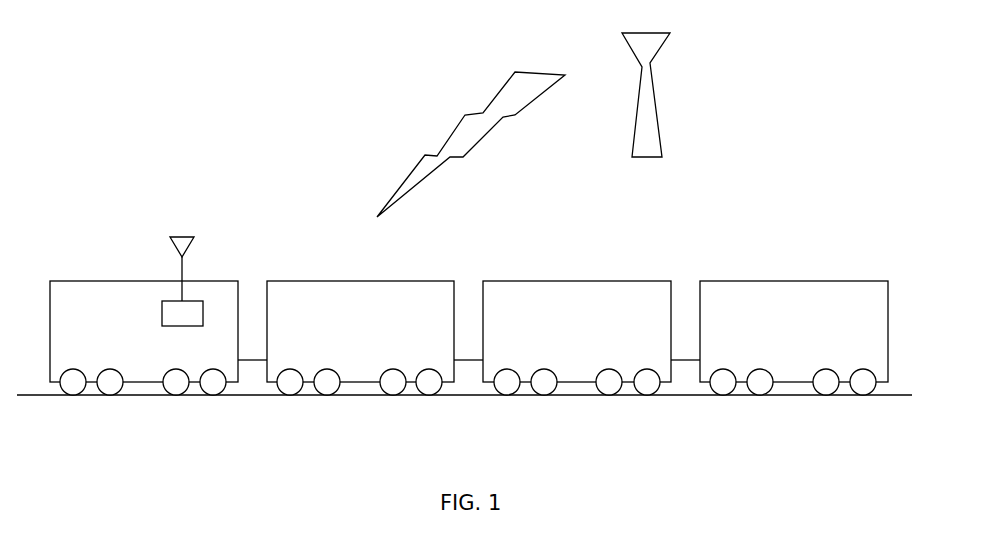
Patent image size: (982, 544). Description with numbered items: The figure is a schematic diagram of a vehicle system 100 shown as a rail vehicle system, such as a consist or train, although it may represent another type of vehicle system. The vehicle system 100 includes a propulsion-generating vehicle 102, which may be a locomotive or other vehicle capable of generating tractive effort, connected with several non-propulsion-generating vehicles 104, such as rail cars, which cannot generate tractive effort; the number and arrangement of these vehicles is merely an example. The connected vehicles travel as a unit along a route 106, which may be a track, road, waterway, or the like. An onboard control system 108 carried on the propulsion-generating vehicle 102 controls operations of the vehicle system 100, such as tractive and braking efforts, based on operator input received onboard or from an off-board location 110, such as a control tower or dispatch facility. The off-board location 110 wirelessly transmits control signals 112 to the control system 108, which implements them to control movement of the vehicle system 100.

The vehicle system 100 is at (108, 213).
The propulsion-generating vehicle 102 is at (93, 281).
The non-propulsion-generating vehicle 104 is at (328, 281).
The route 106 is at (478, 396).
The onboard control system 108 is at (162, 310).
The off-board location 110 is at (665, 45).
The control signals 112 is at (470, 147).